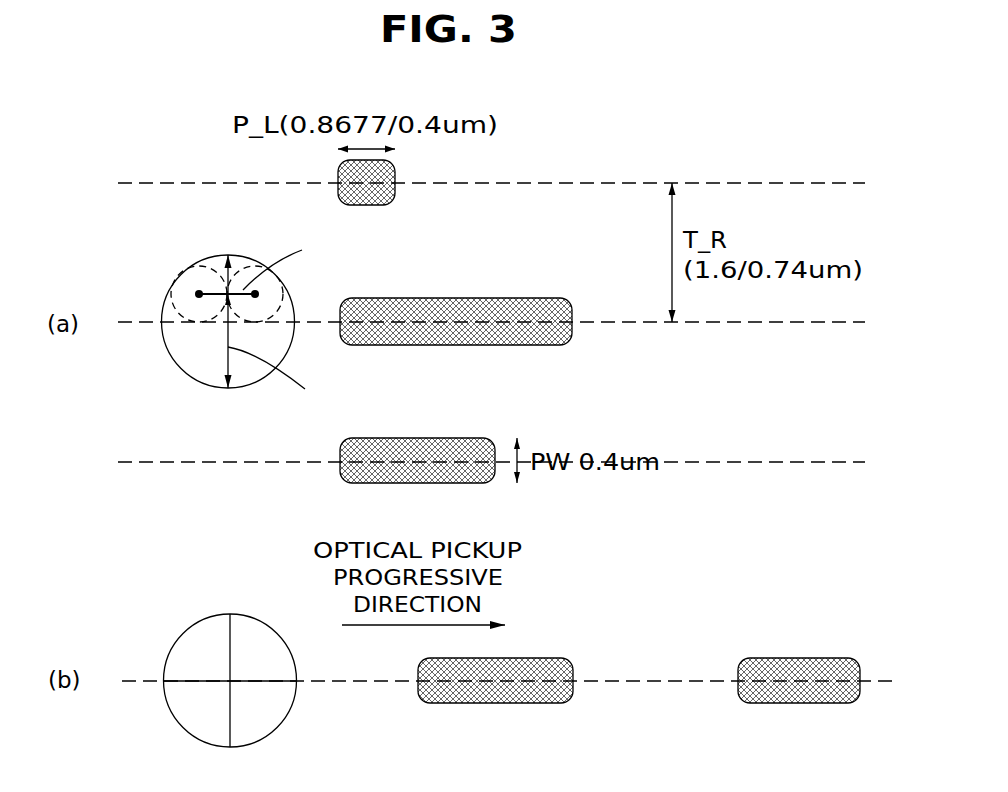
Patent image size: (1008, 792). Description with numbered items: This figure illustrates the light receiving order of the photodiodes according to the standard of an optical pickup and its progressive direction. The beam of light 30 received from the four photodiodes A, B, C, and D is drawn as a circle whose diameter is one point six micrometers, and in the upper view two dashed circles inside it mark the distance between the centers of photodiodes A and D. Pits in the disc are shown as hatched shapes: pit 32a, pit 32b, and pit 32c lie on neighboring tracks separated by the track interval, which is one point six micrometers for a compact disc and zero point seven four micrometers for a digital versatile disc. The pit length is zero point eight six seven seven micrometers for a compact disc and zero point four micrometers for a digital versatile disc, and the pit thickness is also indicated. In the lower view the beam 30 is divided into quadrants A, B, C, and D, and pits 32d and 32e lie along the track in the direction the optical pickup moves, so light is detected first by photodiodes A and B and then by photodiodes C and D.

The beam of light 30 is at (257, 262).
The pit 32a is at (397, 176).
The pit 32b is at (492, 298).
The pit 32c is at (463, 438).
The pit 32d is at (548, 658).
The pit 32e is at (786, 658).